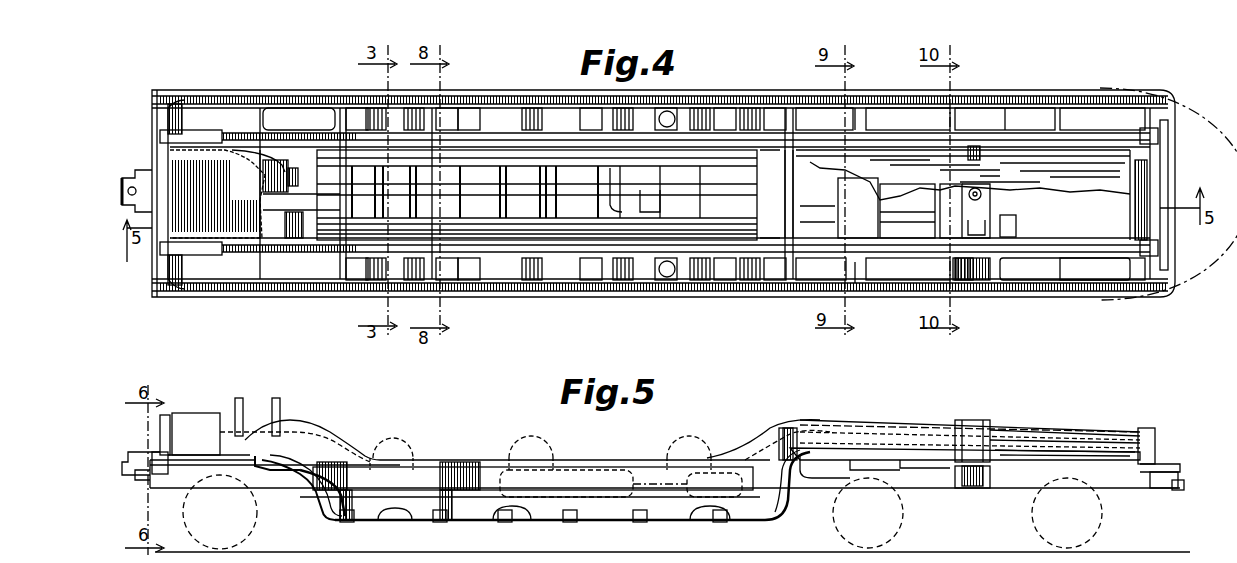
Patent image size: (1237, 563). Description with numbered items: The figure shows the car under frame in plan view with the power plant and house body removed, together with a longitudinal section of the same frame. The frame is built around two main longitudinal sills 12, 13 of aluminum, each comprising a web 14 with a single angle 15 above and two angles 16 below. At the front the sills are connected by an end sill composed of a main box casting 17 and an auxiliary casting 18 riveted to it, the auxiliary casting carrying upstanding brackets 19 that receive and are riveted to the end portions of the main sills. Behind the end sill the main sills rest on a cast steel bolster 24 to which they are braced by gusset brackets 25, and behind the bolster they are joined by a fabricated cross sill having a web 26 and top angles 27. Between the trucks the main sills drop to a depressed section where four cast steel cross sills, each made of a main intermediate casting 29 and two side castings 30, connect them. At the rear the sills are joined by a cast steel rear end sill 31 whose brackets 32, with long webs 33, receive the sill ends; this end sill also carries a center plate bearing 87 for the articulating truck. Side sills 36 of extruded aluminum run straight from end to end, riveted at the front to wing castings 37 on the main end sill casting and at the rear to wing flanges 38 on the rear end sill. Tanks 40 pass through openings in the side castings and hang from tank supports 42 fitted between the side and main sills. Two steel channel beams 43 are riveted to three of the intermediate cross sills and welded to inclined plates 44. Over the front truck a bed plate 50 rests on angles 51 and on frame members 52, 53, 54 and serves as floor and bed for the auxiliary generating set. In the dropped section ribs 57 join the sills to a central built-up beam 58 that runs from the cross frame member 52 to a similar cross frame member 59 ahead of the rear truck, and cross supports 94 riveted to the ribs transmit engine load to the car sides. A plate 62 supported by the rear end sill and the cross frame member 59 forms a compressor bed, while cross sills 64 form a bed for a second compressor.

In FIG. 4, the main longitudinal sill 12 is at (905, 155).
In FIG. 5, the main longitudinal sill 12 is at (900, 425).
In FIG. 4, the main longitudinal sill 13 is at (925, 245).
In FIG. 5, the web 14 is at (305, 440).
In FIG. 4, the single angle 15 is at (1048, 266).
In FIG. 4, the angle 16 is at (250, 158).
In FIG. 4, the main box casting 17 is at (1170, 260).
In FIG. 5, the main box casting 17 is at (1178, 478).
In FIG. 4, the auxiliary casting 18 is at (1148, 220).
In FIG. 5, the auxiliary casting 18 is at (1160, 466).
In FIG. 4, the upstanding bracket 19 is at (1160, 140).
In FIG. 5, the upstanding bracket 19 is at (1152, 445).
In FIG. 4, the bolster 24 is at (990, 120).
In FIG. 5, the bolster 24 is at (970, 488).
In FIG. 4, the gusset bracket 25 is at (985, 156).
In FIG. 5, the gusset bracket 25 is at (970, 430).
In FIG. 4, the web 26 is at (797, 170).
In FIG. 5, the web 26 is at (770, 446).
In FIG. 4, the top angle 27 is at (812, 140).
In FIG. 5, the top angle 27 is at (790, 428).
In FIG. 4, the main intermediate casting 29 is at (328, 178).
In FIG. 5, the main intermediate casting 29 is at (325, 524).
In FIG. 4, the side casting 30 is at (355, 108).
In FIG. 4, the rear end sill 31 is at (148, 160).
In FIG. 5, the rear end sill 31 is at (151, 444).
In FIG. 4, the bracket 32 is at (190, 136).
In FIG. 5, the bracket 32 is at (168, 414).
In FIG. 5, the long web 33 is at (200, 428).
In FIG. 4, the side sill 36 is at (225, 96).
In FIG. 4, the wing casting 37 is at (1135, 118).
In FIG. 4, the wing flange 38 is at (165, 297).
In FIG. 4, the tank 40 is at (716, 300).
In FIG. 5, the tank 40 is at (621, 483).
In FIG. 4, the tank support 42 is at (425, 110).
In FIG. 5, the tank support 42 is at (393, 456).
In FIG. 4, the steel channel beam 43 is at (400, 168).
In FIG. 5, the steel channel beam 43 is at (430, 470).
In FIG. 4, the inclined plate 44 is at (318, 158).
In FIG. 4, the bed plate 50 is at (970, 180).
In FIG. 5, the bed plate 50 is at (1090, 450).
In FIG. 4, the angle 51 is at (880, 147).
In FIG. 4, the cross frame member 52 is at (838, 212).
In FIG. 5, the cross frame member 52 is at (845, 448).
In FIG. 4, the frame member 53 is at (817, 213).
In FIG. 5, the frame member 53 is at (803, 455).
In FIG. 4, the frame member 54 is at (896, 212).
In FIG. 5, the frame member 54 is at (906, 462).
In FIG. 4, the rib 57 is at (665, 164).
In FIG. 5, the rib 57 is at (352, 522).
In FIG. 4, the built-up beam structure 58 is at (280, 212).
In FIG. 5, the built-up beam structure 58 is at (785, 517).
In FIG. 4, the cross frame member 59 is at (268, 176).
In FIG. 5, the cross frame member 59 is at (262, 470).
In FIG. 4, the plate 62 is at (228, 200).
In FIG. 5, the plate 62 is at (232, 458).
In FIG. 5, the cross sill 64 is at (280, 396).
In FIG. 5, the center plate bearing 87 is at (147, 481).
In FIG. 5, the cross support 94 is at (390, 520).